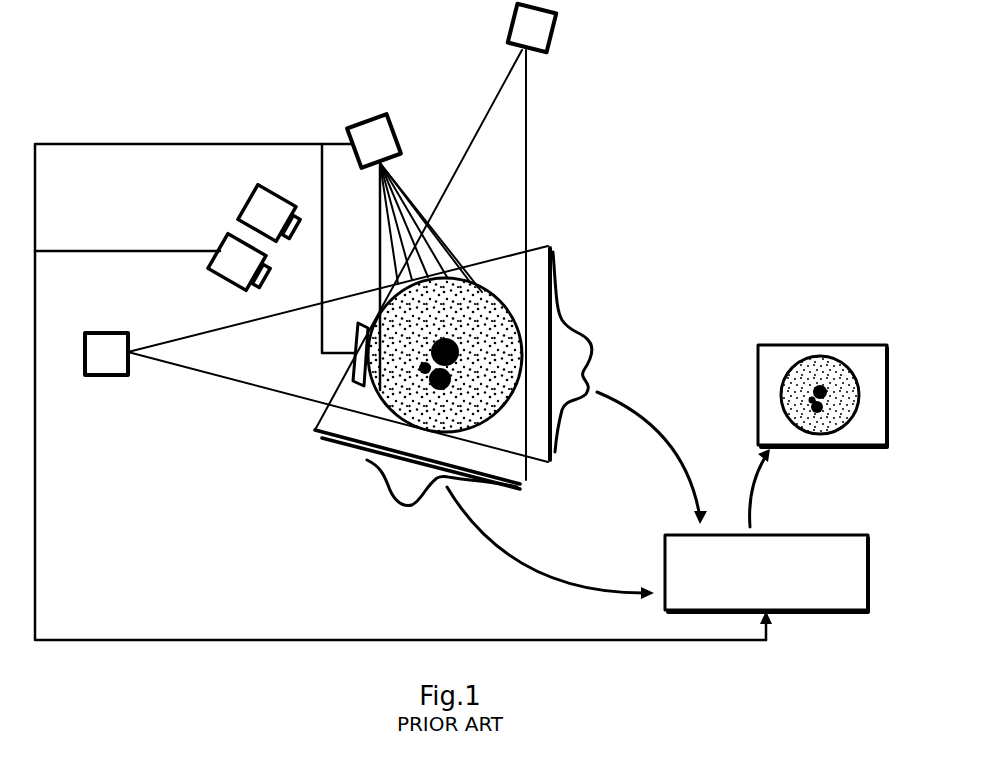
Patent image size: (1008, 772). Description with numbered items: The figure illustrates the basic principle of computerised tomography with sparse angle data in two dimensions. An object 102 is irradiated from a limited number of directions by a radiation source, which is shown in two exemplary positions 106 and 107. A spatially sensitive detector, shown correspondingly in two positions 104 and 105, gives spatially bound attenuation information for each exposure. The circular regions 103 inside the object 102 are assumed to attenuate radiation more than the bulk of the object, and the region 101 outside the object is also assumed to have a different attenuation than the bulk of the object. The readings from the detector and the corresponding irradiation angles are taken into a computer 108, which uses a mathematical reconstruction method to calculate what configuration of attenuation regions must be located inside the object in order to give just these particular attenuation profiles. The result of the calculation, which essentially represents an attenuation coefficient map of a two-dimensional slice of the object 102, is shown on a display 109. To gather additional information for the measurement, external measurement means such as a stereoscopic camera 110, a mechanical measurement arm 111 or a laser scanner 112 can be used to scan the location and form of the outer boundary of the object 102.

The region outside the object 101 is at (507, 435).
The object 102 is at (383, 392).
The circular regions 103 is at (445, 340).
The detector position 104 is at (370, 460).
The detector position 105 is at (590, 338).
The radiation source position 106 is at (95, 347).
The radiation source position 107 is at (548, 42).
The computer 108 is at (807, 538).
The display 109 is at (853, 346).
The stereoscopic camera 110 is at (253, 214).
The mechanical measurement arm 111 is at (357, 332).
The laser scanner 112 is at (362, 134).